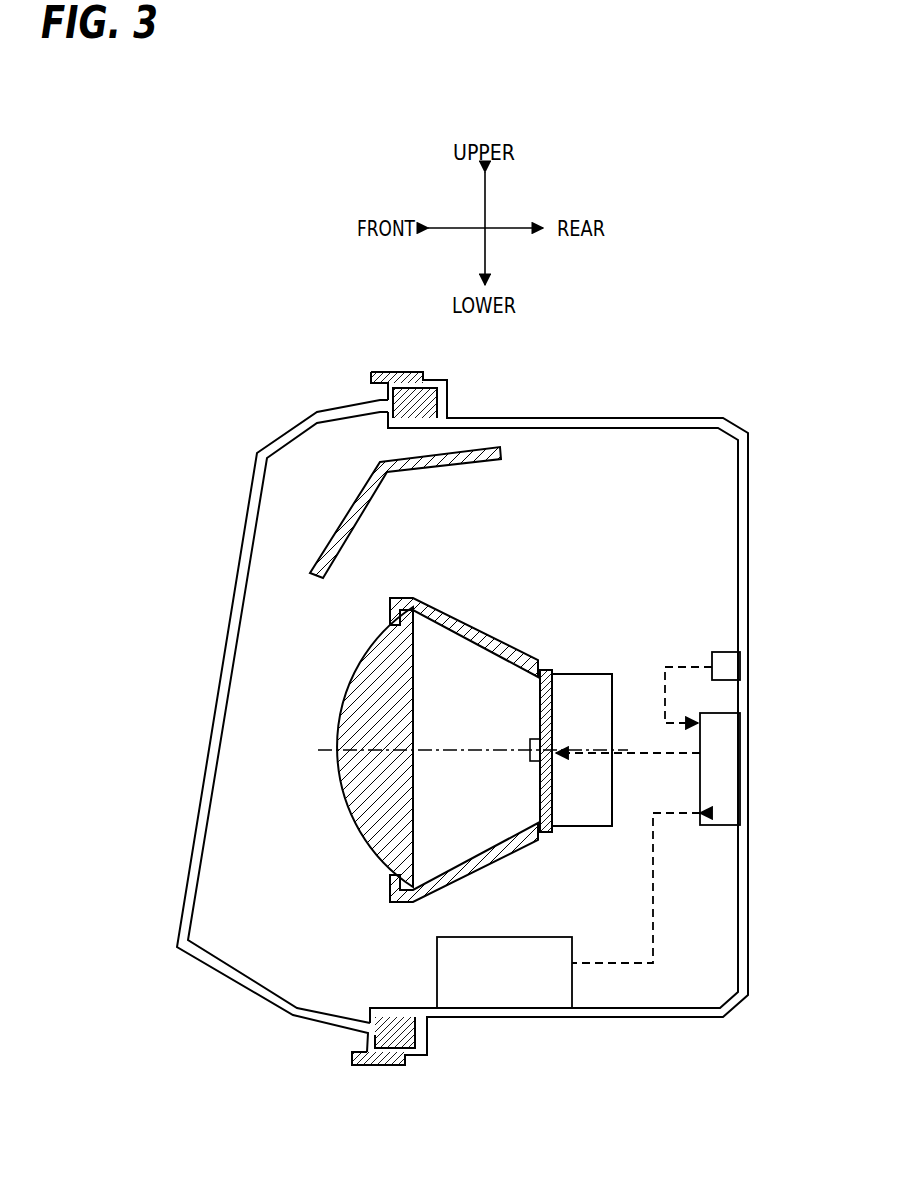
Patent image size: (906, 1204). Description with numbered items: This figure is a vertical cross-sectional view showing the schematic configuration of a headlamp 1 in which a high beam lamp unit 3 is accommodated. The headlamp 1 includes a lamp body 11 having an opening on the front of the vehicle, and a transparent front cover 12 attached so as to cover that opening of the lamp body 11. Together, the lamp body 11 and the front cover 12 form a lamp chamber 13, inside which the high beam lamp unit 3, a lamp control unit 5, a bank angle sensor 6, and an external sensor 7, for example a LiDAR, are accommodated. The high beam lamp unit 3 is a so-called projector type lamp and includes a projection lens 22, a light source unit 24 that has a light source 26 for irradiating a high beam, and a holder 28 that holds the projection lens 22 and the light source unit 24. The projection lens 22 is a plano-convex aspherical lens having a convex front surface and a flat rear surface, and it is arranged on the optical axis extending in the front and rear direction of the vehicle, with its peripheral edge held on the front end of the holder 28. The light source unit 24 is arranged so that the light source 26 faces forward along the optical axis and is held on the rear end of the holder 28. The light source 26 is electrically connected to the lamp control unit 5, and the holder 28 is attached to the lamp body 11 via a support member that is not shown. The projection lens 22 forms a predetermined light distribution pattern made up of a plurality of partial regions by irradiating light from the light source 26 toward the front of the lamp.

The headlamp 1 is at (627, 349).
The high beam lamp unit 3 is at (336, 685).
The lamp control unit 5 is at (730, 780).
The bank angle sensor 6 is at (728, 665).
The external sensor 7 is at (495, 985).
The lamp body 11 is at (683, 417).
The front cover 12 is at (300, 418).
The lamp chamber 13 is at (530, 455).
The projection lens 22 is at (360, 810).
The light source unit 24 is at (556, 664).
The light source 26 is at (523, 726).
The holder 28 is at (483, 636).